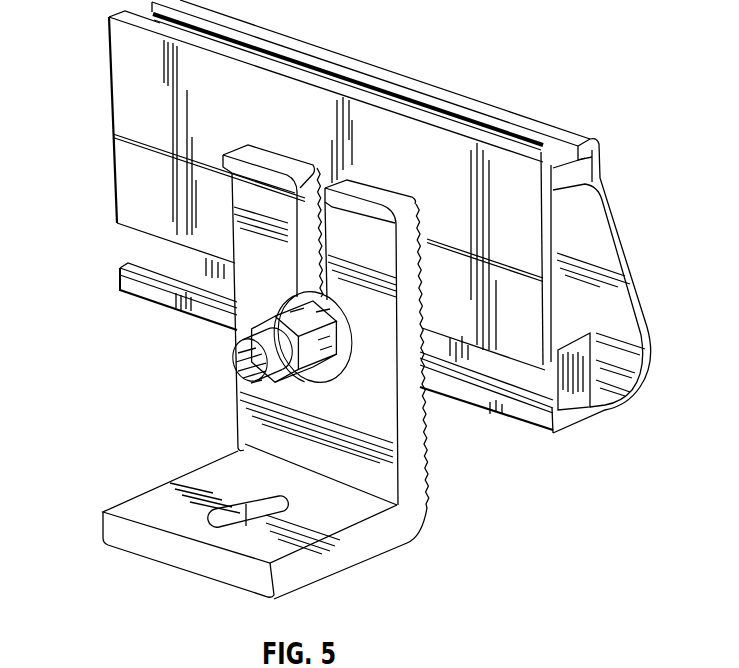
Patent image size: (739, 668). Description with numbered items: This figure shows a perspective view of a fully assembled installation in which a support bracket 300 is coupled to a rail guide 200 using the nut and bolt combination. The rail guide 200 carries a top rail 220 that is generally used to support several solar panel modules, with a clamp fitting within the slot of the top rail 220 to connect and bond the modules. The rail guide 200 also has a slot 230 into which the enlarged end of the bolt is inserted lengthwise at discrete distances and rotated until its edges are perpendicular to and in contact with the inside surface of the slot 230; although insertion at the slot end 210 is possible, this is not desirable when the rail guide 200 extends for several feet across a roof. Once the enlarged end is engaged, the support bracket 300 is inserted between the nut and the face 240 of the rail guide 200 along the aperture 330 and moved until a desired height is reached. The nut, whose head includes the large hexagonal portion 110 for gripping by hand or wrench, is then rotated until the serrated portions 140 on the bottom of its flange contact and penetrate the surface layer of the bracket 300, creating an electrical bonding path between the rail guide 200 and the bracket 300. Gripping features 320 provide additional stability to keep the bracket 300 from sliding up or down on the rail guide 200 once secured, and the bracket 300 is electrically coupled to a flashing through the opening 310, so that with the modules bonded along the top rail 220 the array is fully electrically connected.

The large hexagonal portion 110 is at (231, 348).
The serrated portions 140 is at (402, 385).
The rail guide 200 is at (618, 235).
The slot end 210 is at (588, 404).
The top rail 220 is at (490, 116).
The slot 230 is at (158, 272).
The face 240 is at (123, 88).
The support bracket 300 is at (375, 556).
The opening 310 is at (237, 503).
The gripping features 320 is at (428, 490).
The aperture 330 is at (305, 268).